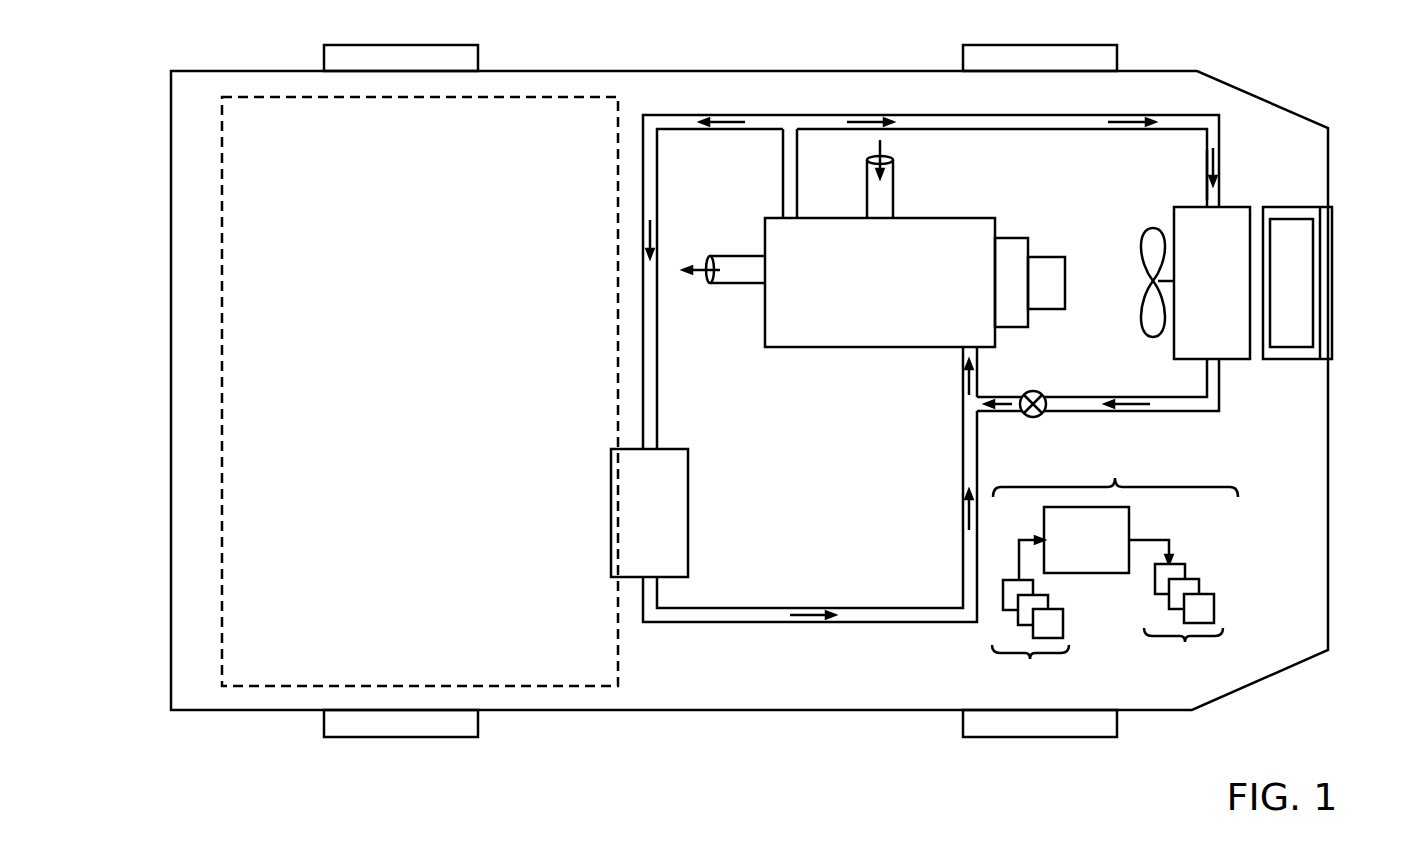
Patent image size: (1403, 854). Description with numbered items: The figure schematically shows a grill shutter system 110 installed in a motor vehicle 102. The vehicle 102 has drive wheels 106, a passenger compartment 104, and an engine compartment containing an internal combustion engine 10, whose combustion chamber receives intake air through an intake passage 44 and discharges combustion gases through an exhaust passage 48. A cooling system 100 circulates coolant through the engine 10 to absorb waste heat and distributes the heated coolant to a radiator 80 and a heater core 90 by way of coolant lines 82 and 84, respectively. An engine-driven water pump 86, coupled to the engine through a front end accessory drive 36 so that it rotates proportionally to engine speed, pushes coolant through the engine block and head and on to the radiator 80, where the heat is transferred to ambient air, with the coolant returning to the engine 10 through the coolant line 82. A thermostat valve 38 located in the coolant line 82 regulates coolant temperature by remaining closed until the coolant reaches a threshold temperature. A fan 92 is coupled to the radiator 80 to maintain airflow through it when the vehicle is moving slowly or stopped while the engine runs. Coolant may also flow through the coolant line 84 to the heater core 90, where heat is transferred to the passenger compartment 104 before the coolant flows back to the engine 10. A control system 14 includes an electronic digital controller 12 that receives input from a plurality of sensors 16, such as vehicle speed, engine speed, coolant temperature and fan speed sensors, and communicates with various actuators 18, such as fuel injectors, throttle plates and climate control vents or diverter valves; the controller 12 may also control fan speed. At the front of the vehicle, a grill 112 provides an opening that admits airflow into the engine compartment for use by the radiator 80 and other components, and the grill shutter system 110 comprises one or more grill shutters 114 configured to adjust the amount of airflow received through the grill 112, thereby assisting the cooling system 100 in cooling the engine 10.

The internal combustion engine 10 is at (880, 282).
The controller 12 is at (1096, 543).
The control system 14 is at (1114, 485).
The sensors 16 is at (1030, 640).
The actuators 18 is at (1185, 623).
The front end accessory drive 36 is at (1012, 238).
The thermostat valve 38 is at (1043, 395).
The intake passage 44 is at (895, 195).
The exhaust passage 48 is at (745, 284).
The radiator 80 is at (1212, 283).
The coolant line 82 is at (1060, 100).
The coolant line 84 is at (720, 115).
The engine-driven water pump 86 is at (1046, 283).
The heater core 90 is at (649, 513).
The fan 92 is at (1145, 248).
The cooling system 100 is at (1240, 152).
The motor vehicle 102 is at (655, 72).
The passenger compartment 104 is at (420, 391).
The drive wheels 106 is at (405, 45).
The grill shutter system 110 is at (1268, 362).
The grill 112 is at (1335, 243).
The grill shutters 114 is at (1291, 283).